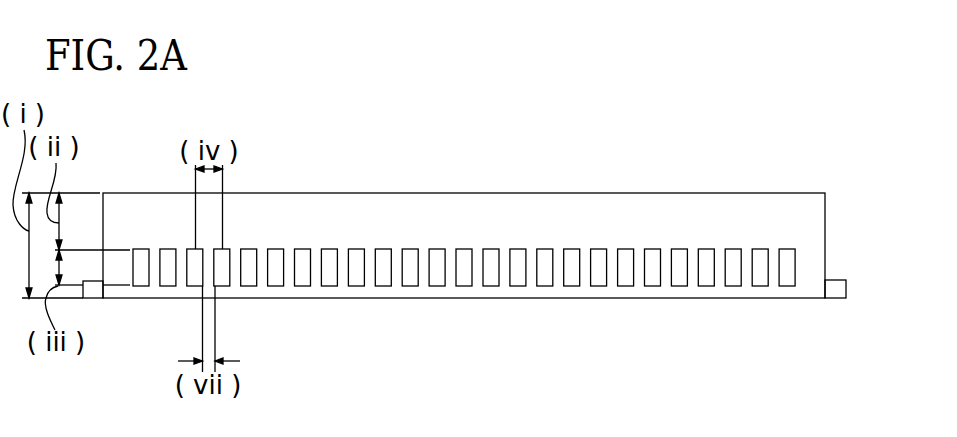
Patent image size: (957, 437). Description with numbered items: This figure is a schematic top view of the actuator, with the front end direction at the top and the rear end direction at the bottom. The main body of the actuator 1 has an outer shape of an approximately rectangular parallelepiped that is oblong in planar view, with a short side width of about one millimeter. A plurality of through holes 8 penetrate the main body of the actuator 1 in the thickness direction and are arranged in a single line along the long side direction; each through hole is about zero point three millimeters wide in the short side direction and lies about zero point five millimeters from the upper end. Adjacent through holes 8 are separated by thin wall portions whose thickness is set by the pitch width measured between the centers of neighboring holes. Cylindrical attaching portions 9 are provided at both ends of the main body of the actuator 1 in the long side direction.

The main body of the actuator 1 is at (353, 208).
The through holes 8 is at (462, 258).
The cylindrical attaching portions 9 is at (91, 291).